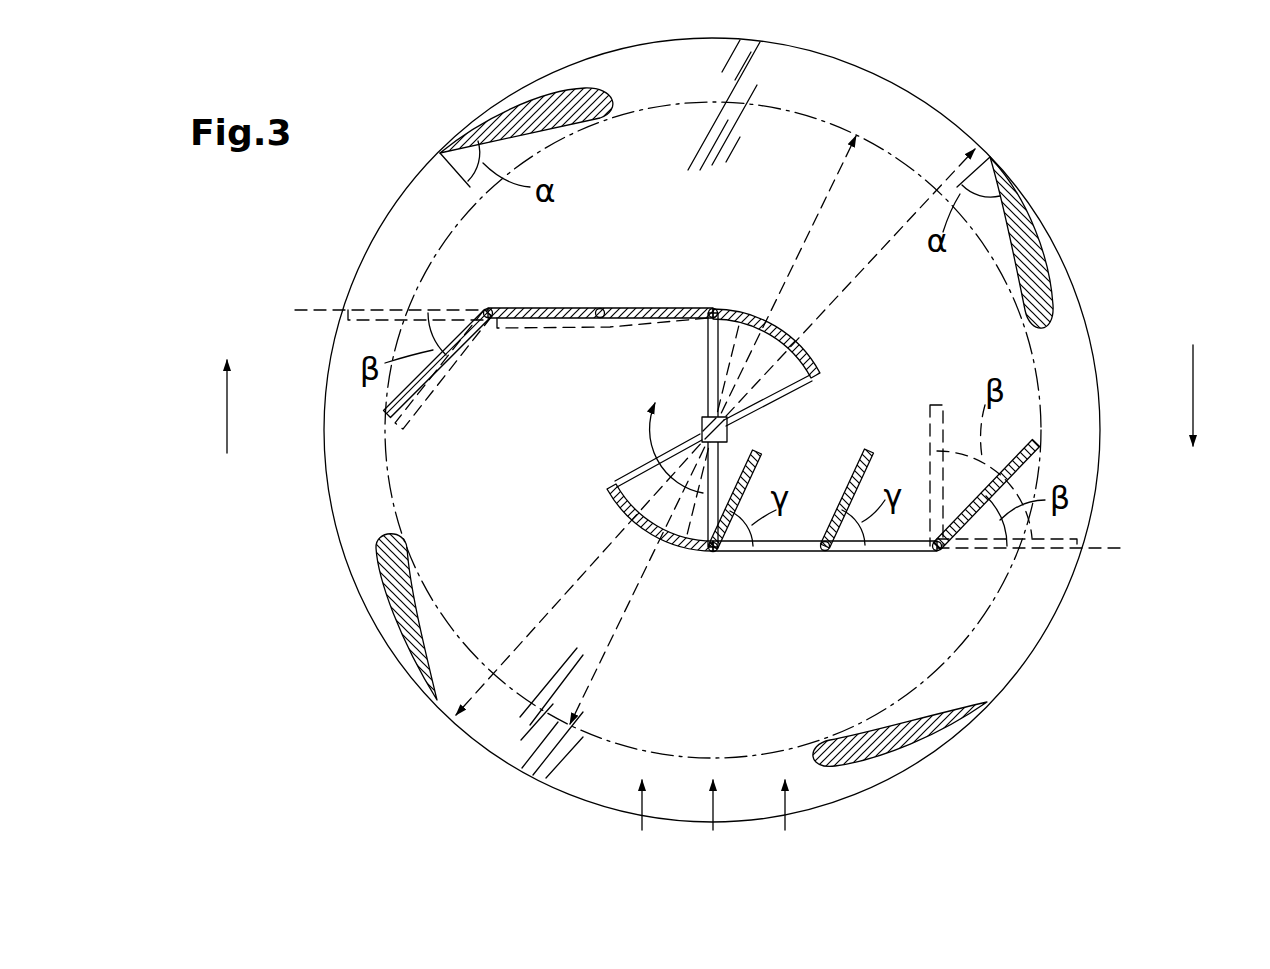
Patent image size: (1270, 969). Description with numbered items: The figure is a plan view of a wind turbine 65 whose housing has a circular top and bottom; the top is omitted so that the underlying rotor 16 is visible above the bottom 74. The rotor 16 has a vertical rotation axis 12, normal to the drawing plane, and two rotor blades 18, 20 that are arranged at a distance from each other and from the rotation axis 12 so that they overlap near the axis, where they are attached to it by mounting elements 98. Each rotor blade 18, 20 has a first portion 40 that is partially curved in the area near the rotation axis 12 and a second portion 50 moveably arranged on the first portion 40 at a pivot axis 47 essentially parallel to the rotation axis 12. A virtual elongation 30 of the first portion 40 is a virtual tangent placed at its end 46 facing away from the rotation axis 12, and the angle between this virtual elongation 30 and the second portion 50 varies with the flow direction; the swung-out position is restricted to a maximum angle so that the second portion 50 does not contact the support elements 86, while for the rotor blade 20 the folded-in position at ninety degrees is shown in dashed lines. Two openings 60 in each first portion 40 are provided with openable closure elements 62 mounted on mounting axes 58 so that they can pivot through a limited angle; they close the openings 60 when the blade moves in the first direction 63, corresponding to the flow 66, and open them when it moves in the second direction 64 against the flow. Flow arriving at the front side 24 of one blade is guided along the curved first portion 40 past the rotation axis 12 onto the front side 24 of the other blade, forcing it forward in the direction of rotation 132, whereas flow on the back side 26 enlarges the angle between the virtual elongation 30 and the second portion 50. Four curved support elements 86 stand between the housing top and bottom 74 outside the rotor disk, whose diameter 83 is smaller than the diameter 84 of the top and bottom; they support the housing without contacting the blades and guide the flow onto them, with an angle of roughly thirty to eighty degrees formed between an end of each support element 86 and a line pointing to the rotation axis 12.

The rotation axis 12 is at (728, 432).
The rotor 16 is at (898, 628).
The rotor blade 18 is at (730, 436).
The rotor blade 20 is at (755, 588).
The front side 24 is at (513, 323).
The back side 26 is at (695, 310).
The virtual elongation 30 is at (310, 308).
The first portion 40 is at (588, 303).
The end 46 is at (496, 303).
The pivot axis 47 is at (486, 308).
The second portion 50 is at (410, 412).
The mounting axis 58 is at (720, 308).
The opening 60 is at (797, 543).
The closure element 62 is at (757, 472).
The first direction 63 is at (227, 396).
The second direction 64 is at (1195, 394).
The wind turbine 65 is at (993, 108).
The flow 66 is at (640, 815).
The bottom 74 is at (490, 745).
The diameter of the rotor disk 83 is at (817, 213).
The diameter of the top and bottom 84 is at (887, 237).
The support element 86 is at (553, 92).
The mounting element 98 is at (708, 365).
The direction of rotation 132 is at (650, 437).